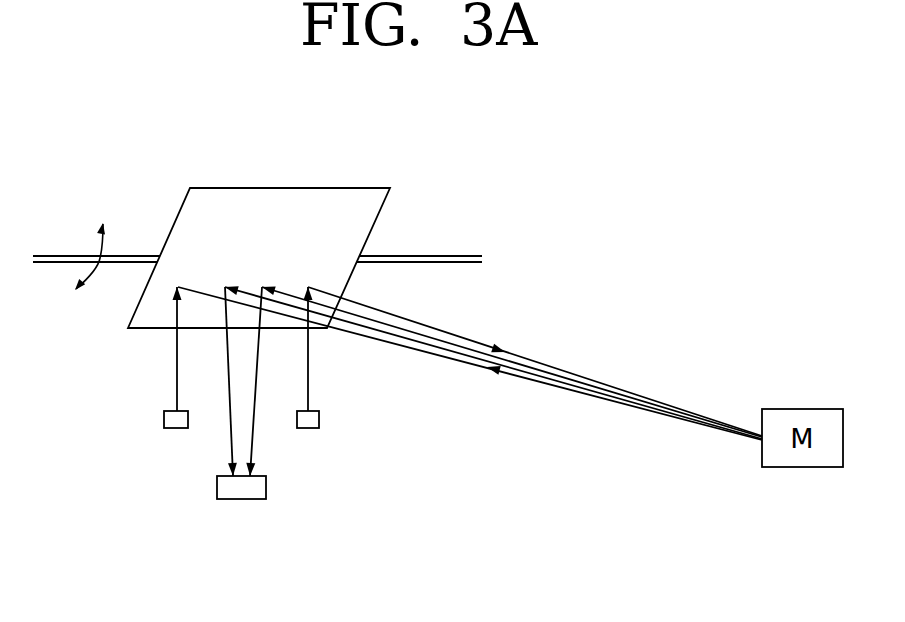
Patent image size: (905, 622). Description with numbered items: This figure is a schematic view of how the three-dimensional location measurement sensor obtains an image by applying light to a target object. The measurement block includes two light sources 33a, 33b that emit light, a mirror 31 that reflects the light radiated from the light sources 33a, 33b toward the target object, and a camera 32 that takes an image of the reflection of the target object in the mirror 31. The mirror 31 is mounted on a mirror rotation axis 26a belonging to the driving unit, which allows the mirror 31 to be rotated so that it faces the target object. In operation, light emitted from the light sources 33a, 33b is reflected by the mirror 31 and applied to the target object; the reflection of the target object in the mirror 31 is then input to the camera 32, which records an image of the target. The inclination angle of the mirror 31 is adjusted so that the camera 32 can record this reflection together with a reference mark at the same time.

The mirror 31 is at (285, 187).
The mirror rotation axis 26a is at (453, 255).
The camera 32 is at (266, 488).
The light source 33a is at (164, 418).
The light source 33b is at (319, 418).